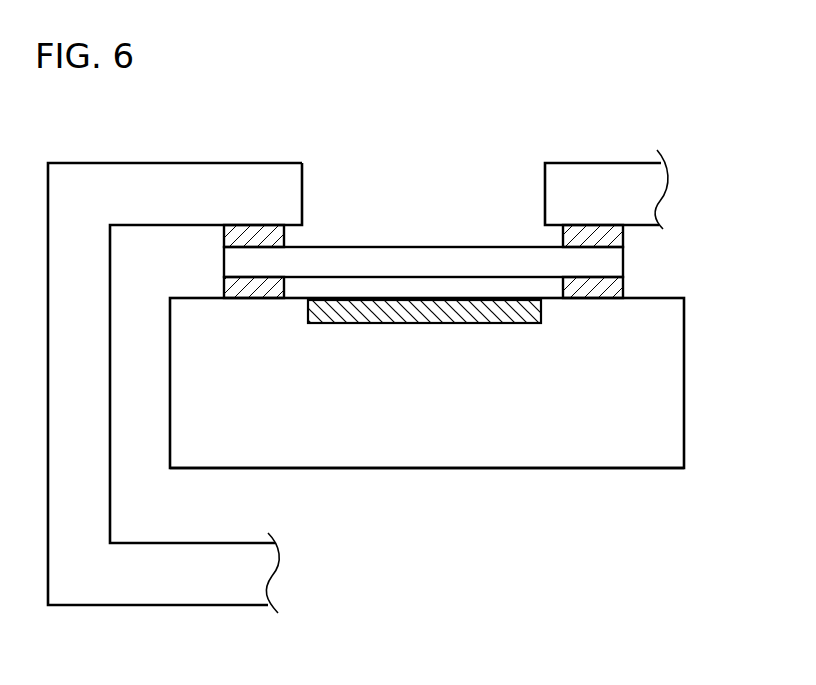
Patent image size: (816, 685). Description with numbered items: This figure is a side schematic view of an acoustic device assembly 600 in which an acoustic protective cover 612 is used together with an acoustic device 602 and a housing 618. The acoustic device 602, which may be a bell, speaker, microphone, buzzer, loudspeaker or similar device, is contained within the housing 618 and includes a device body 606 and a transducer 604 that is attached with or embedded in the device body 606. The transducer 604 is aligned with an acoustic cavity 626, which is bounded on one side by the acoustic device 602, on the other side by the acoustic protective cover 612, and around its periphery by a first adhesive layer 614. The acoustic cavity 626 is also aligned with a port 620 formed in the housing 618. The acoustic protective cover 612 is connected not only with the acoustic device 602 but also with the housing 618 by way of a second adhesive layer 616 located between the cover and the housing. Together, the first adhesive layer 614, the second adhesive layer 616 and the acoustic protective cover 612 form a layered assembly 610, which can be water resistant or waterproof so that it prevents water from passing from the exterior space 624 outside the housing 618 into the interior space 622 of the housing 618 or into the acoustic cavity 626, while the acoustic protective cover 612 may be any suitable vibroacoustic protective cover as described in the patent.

The acoustic device assembly 600 is at (587, 112).
The acoustic device 602 is at (475, 412).
The transducer 604 is at (373, 324).
The device body 606 is at (543, 470).
The layered assembly 610 is at (506, 261).
The acoustic protective cover 612 is at (618, 263).
The first adhesive layer 614 is at (615, 293).
The second adhesive layer 616 is at (617, 240).
The housing 618 is at (135, 162).
The port 620 is at (400, 195).
The interior space 622 is at (182, 274).
The exterior space 624 is at (307, 132).
The acoustic cavity 626 is at (413, 288).